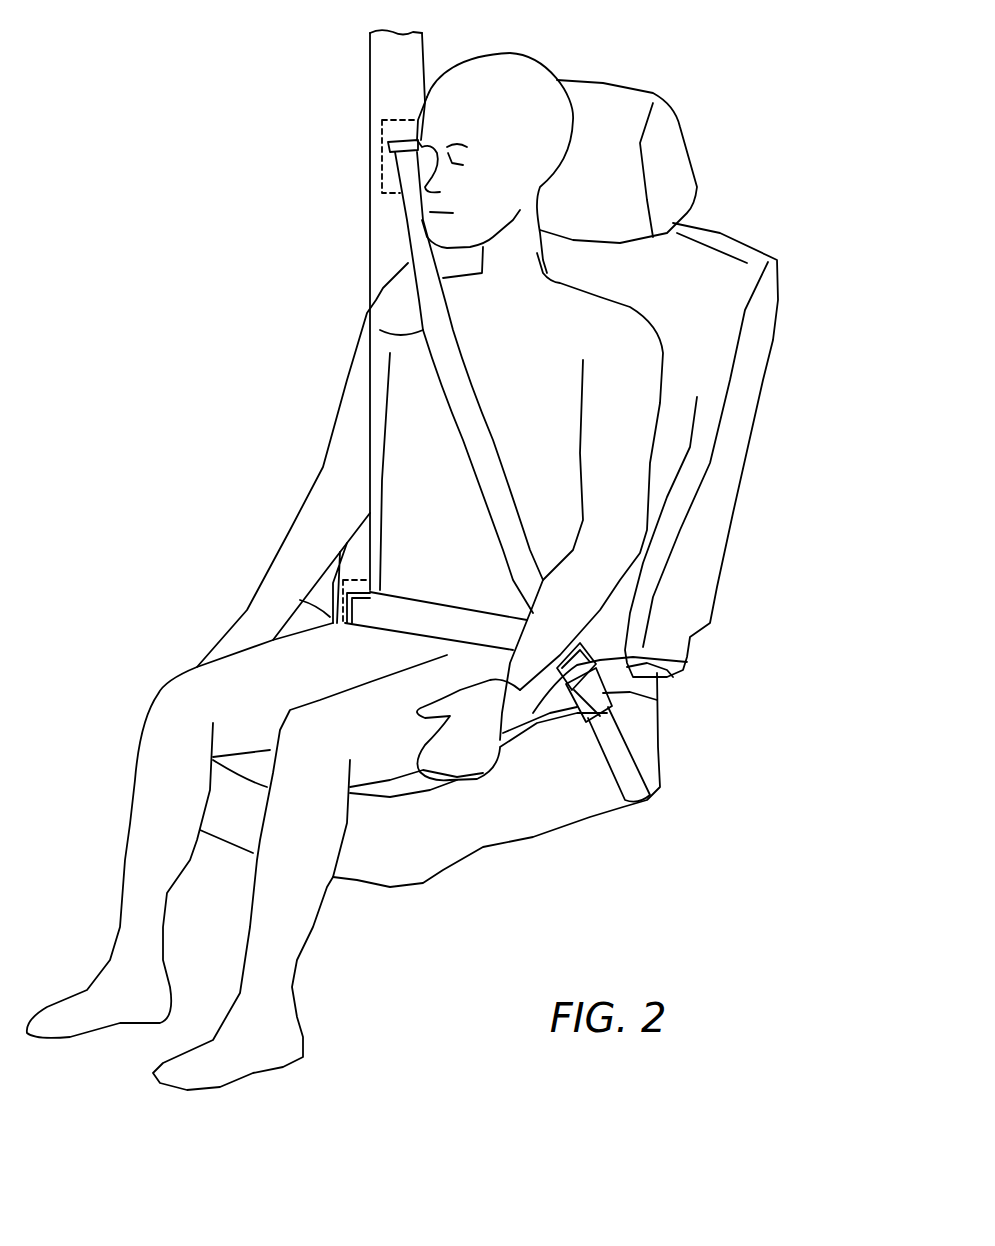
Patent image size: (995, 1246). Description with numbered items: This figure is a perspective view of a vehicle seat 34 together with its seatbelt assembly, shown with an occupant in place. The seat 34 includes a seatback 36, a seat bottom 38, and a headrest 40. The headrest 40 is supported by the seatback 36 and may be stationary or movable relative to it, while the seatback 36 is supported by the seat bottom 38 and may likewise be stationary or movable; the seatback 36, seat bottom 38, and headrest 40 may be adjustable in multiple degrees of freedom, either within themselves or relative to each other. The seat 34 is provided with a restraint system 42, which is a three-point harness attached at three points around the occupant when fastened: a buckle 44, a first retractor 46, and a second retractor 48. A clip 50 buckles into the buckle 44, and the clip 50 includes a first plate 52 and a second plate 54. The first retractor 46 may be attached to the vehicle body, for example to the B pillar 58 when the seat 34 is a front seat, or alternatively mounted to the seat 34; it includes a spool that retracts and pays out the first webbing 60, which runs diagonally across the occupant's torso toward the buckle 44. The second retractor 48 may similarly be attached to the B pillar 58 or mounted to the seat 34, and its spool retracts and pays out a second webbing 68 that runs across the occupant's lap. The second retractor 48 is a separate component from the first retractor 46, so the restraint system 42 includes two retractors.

The seat 34 is at (576, 483).
The seatback 36 is at (720, 580).
The seat bottom 38 is at (533, 837).
The headrest 40 is at (680, 130).
The restraint system 42 is at (352, 230).
The buckle 44 is at (657, 700).
The first retractor 46 is at (380, 157).
The second retractor 48 is at (357, 580).
The clip 50 is at (687, 662).
The first plate 52 is at (553, 677).
The second plate 54 is at (557, 687).
The B pillar 58 is at (370, 77).
The first webbing 60 is at (427, 333).
The second webbing 68 is at (390, 627).